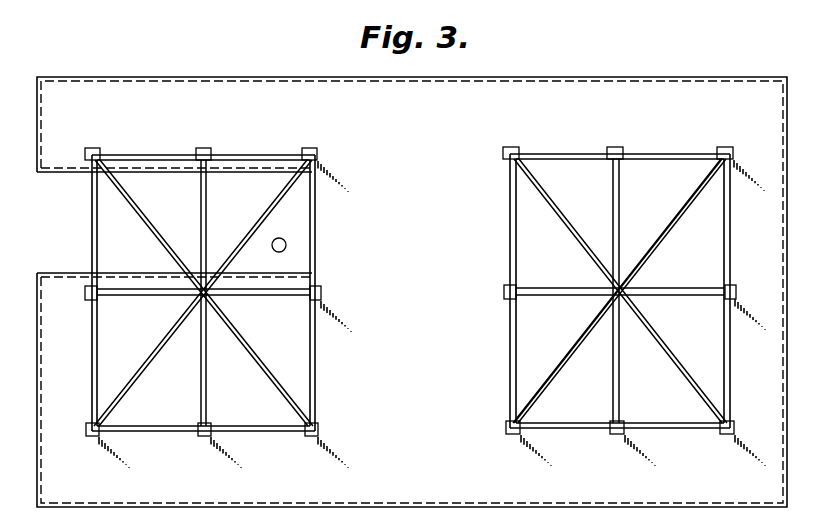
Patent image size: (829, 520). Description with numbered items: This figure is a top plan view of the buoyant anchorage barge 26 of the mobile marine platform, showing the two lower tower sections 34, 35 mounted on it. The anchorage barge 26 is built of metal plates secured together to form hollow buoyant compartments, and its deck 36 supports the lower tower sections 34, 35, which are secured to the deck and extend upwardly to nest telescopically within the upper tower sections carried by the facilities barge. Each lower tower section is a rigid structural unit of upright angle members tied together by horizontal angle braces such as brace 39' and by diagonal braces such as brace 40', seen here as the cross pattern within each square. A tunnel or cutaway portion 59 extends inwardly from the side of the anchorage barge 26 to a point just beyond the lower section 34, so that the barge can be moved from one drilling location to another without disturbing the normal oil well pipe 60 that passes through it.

The anchorage barge 26 is at (329, 79).
The deck 36 is at (422, 149).
The tunnel or cutaway portion 59 is at (71, 176).
The lower tower section 34 is at (316, 325).
The oil well pipe 60 is at (280, 237).
The lower tower section 35 is at (510, 218).
The horizontal angle brace 39' is at (620, 305).
The diagonal brace 40' is at (618, 291).